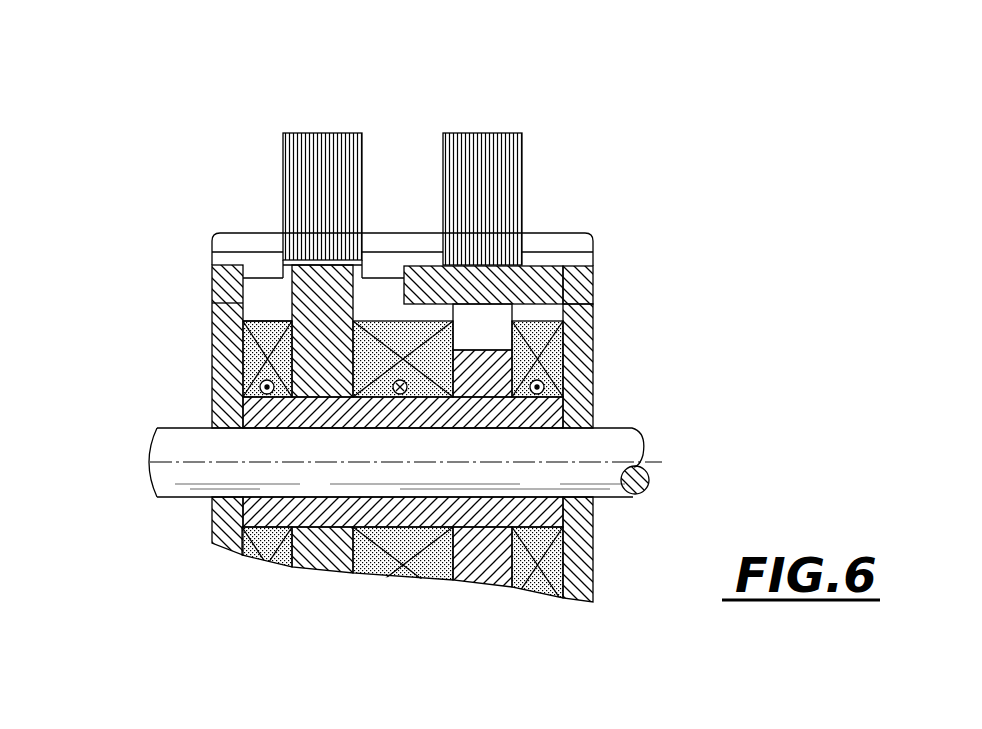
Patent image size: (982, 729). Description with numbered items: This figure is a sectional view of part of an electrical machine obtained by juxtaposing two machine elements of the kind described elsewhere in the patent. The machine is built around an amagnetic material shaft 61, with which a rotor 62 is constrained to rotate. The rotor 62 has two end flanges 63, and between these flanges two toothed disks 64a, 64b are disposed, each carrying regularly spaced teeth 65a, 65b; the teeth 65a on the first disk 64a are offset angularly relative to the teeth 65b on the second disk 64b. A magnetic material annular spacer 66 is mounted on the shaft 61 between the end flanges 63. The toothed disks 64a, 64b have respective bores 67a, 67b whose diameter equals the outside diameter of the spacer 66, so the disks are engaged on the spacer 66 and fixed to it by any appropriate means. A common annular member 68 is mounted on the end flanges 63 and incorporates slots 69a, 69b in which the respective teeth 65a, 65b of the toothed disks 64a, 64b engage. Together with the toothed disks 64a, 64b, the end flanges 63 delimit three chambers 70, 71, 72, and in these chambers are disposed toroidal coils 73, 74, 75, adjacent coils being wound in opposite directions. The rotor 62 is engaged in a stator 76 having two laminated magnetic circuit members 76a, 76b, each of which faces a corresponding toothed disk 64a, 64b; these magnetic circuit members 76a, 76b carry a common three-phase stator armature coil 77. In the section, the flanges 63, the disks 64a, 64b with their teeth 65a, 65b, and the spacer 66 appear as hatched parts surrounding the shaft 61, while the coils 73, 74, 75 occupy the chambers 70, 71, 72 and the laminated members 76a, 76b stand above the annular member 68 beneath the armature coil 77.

The amagnetic material shaft 61 is at (173, 489).
The rotor 62 is at (399, 414).
The end flanges 63 is at (399, 414).
The toothed disk 64a is at (223, 328).
The toothed disk 64b is at (477, 373).
The teeth 65a is at (321, 290).
The teeth 65b is at (477, 328).
The magnetic material annular spacer 66 is at (594, 522).
The bore 67a is at (307, 430).
The bore 67b is at (490, 428).
The common annular member 68 is at (578, 282).
The slots 69a is at (265, 297).
The slots 69b is at (480, 280).
The chamber 70 is at (248, 376).
The chamber 71 is at (355, 572).
The chamber 72 is at (518, 560).
The toroidal coil 73 is at (279, 567).
The toroidal coil 74 is at (436, 567).
The toroidal coil 75 is at (540, 570).
The stator 76 is at (443, 141).
The laminated magnetic circuit member 76a is at (326, 148).
The laminated magnetic circuit member 76b is at (486, 148).
The three-phase stator armature coil 77 is at (262, 233).